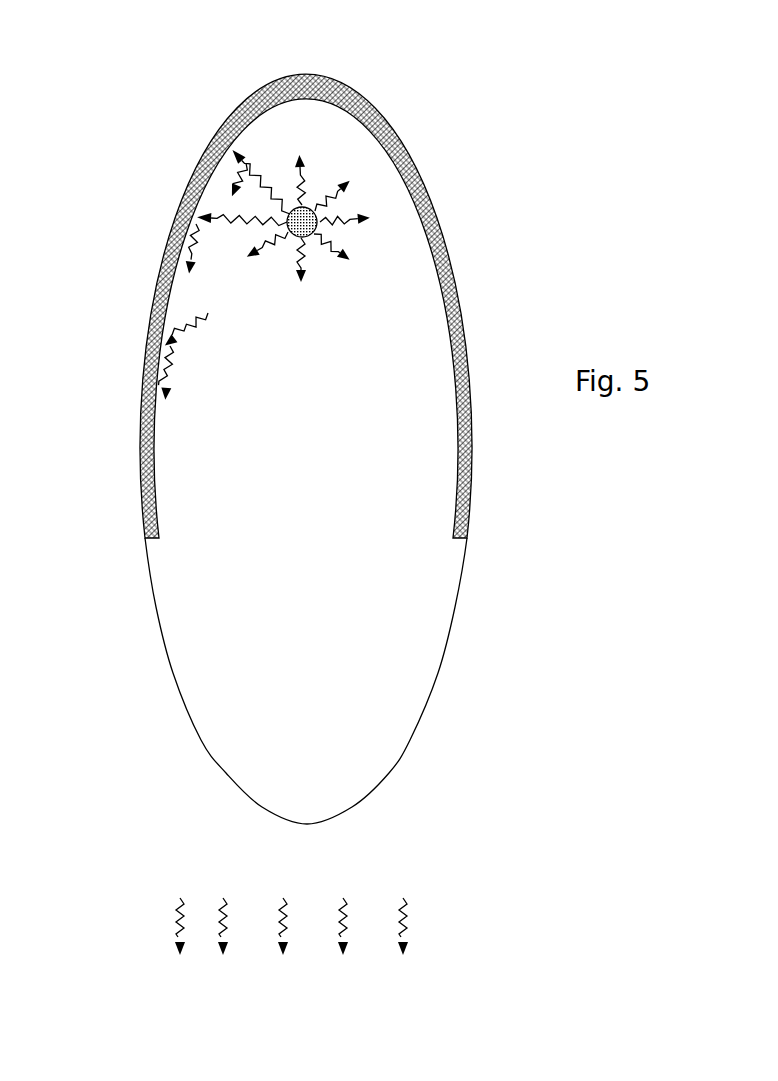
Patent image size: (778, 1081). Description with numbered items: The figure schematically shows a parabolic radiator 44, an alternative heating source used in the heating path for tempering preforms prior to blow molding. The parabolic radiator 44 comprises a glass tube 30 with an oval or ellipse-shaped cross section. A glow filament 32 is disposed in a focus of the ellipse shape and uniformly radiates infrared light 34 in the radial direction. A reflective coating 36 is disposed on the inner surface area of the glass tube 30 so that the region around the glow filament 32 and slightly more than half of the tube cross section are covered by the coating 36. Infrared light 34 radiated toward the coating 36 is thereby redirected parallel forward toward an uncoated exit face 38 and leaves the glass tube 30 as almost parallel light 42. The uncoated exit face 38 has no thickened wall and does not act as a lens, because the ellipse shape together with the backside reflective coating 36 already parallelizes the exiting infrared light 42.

The glass tube 30 is at (156, 613).
The glow filament 32 is at (318, 214).
The infrared light 34 is at (310, 157).
The reflective coating 36 is at (314, 76).
The uncoated exit face 38 is at (405, 637).
The parallel light 42 is at (180, 898).
The parabolic radiator 44 is at (168, 108).